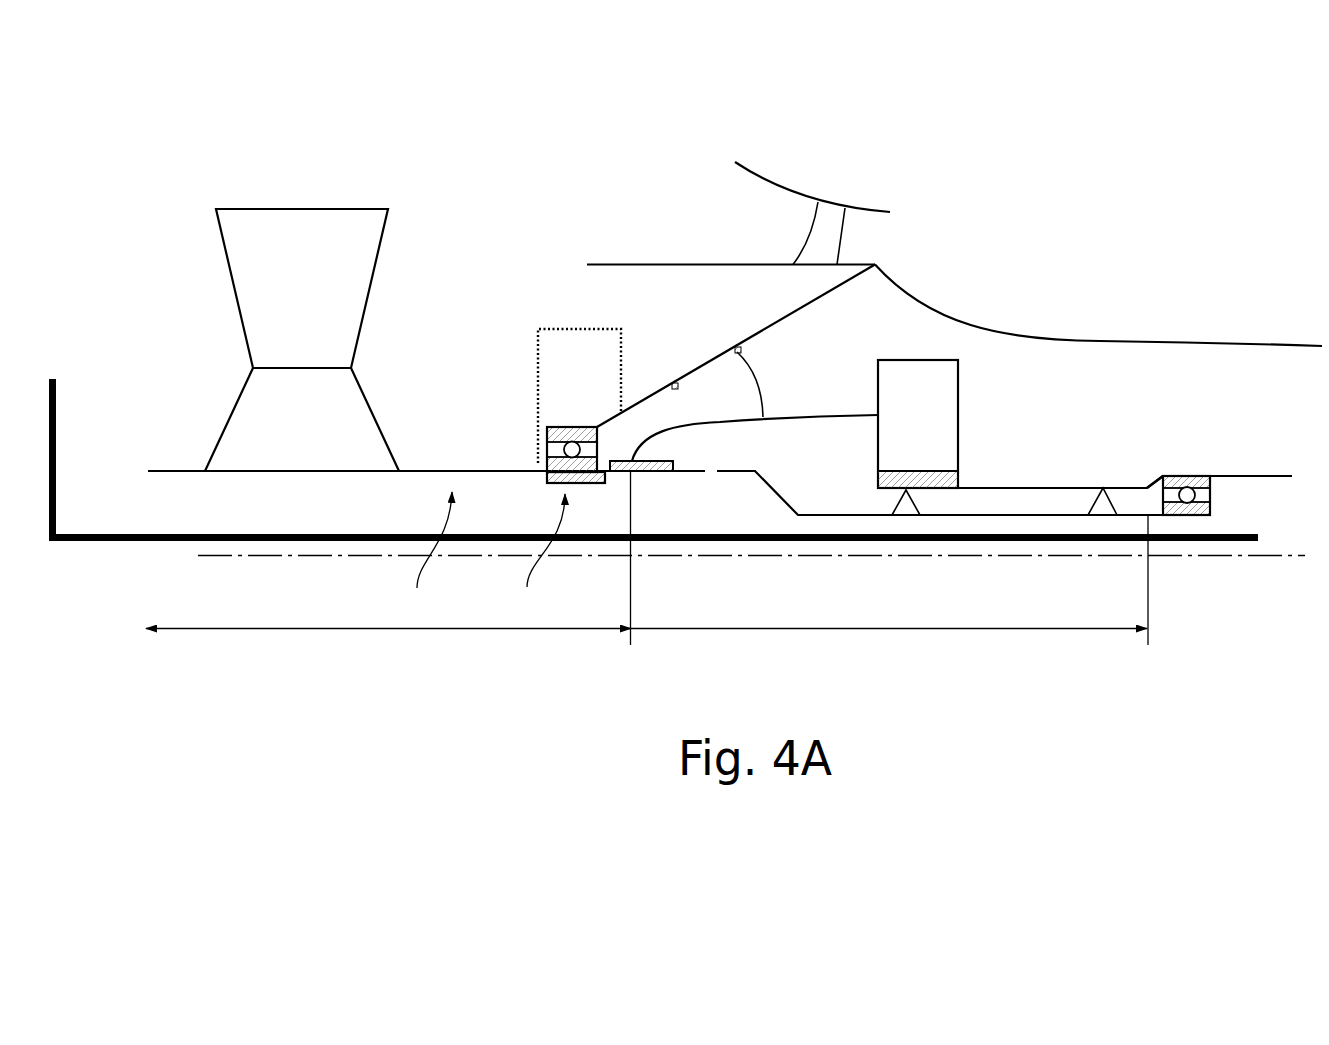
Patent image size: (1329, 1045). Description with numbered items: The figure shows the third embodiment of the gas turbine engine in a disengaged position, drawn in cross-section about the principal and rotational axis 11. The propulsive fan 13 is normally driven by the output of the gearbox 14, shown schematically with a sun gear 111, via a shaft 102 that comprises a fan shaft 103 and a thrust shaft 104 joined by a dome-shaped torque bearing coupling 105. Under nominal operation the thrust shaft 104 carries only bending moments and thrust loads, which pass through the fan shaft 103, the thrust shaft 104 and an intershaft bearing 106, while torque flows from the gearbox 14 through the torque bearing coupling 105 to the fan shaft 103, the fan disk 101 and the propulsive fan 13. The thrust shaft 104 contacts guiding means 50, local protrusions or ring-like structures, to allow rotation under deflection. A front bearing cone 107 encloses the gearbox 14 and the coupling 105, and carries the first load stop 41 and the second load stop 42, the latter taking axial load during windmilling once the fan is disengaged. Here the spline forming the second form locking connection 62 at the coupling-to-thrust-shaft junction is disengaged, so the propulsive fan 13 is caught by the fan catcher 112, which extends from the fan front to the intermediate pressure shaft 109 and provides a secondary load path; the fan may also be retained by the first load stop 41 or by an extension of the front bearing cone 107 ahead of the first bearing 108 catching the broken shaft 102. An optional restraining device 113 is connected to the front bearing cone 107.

The principal and rotational axis 11 is at (1237, 558).
The propulsive fan 13 is at (247, 259).
The gearbox 14 is at (942, 410).
The first load stop 41 is at (737, 352).
The second load stop 42 is at (673, 385).
The guiding means 50 is at (906, 517).
The second form locking connection device 62 is at (537, 556).
The fan disk 101 is at (248, 417).
The shaft 102 is at (421, 555).
The fan shaft 103 is at (388, 564).
The thrust shaft 104 is at (889, 586).
The torque bearing coupling 105 is at (775, 420).
The intershaft bearing 106 is at (1187, 480).
The front bearing cone 107 is at (763, 330).
The first bearing 108 is at (558, 433).
The intermediate pressure shaft 109 is at (1110, 487).
The sun gear 111 is at (943, 482).
The fan catcher 112 is at (67, 545).
The restraining device 113 is at (545, 329).